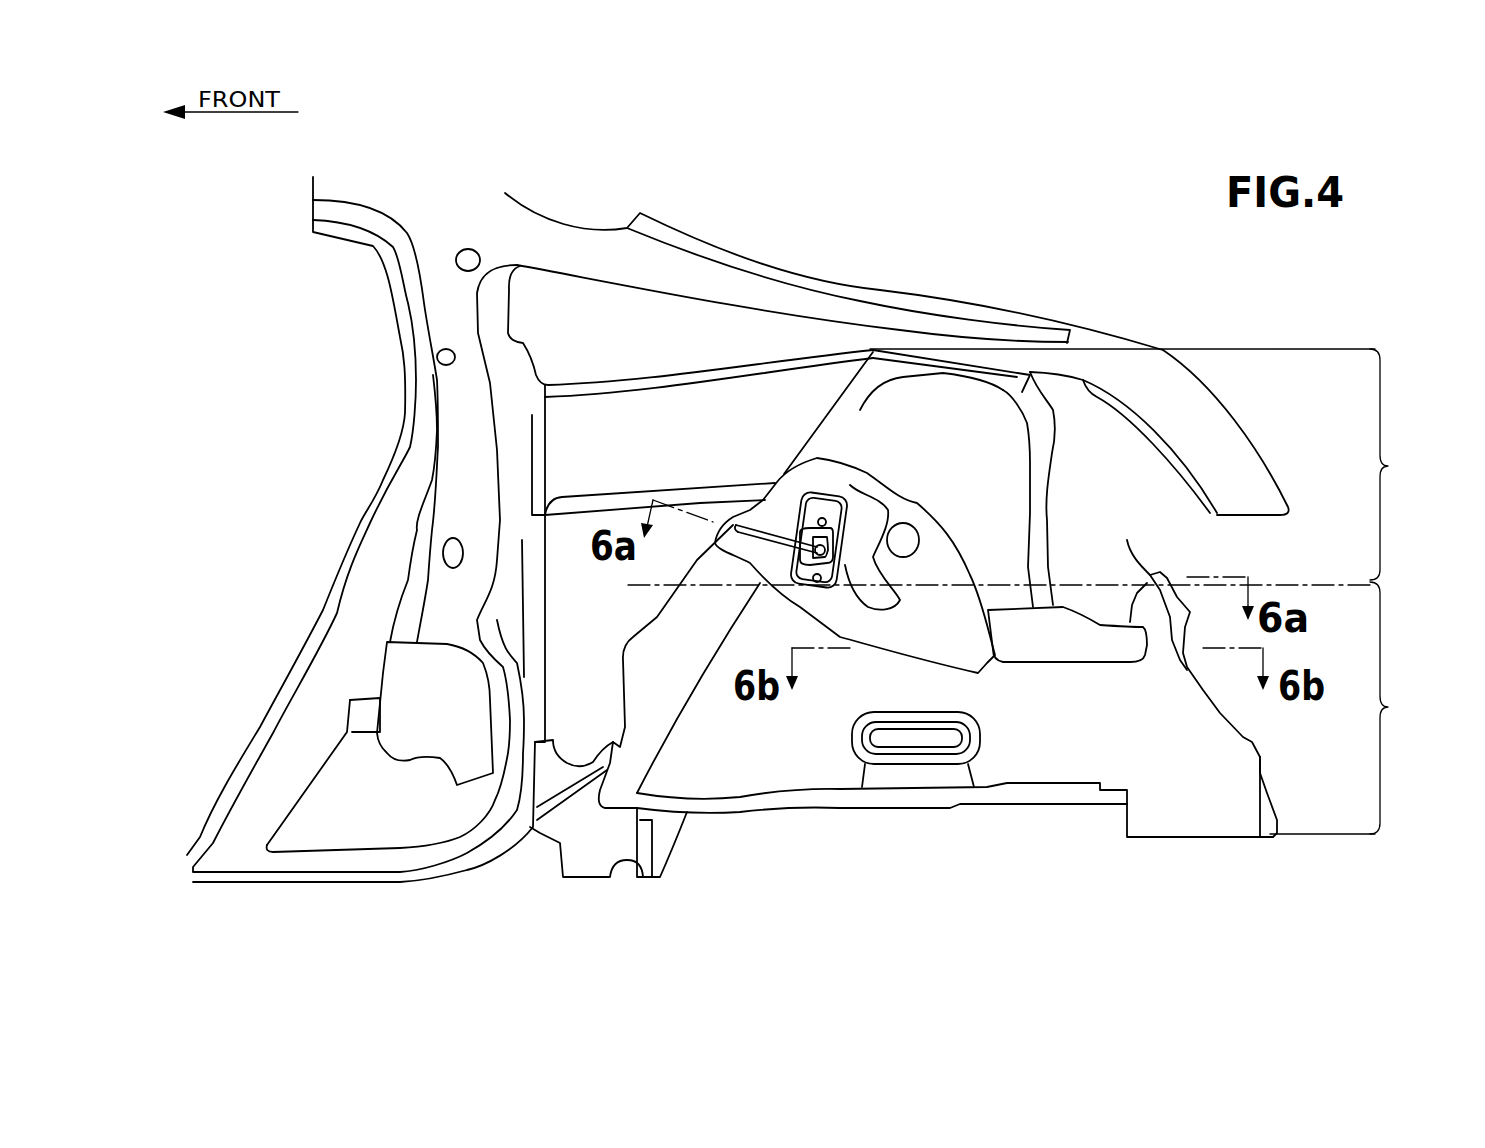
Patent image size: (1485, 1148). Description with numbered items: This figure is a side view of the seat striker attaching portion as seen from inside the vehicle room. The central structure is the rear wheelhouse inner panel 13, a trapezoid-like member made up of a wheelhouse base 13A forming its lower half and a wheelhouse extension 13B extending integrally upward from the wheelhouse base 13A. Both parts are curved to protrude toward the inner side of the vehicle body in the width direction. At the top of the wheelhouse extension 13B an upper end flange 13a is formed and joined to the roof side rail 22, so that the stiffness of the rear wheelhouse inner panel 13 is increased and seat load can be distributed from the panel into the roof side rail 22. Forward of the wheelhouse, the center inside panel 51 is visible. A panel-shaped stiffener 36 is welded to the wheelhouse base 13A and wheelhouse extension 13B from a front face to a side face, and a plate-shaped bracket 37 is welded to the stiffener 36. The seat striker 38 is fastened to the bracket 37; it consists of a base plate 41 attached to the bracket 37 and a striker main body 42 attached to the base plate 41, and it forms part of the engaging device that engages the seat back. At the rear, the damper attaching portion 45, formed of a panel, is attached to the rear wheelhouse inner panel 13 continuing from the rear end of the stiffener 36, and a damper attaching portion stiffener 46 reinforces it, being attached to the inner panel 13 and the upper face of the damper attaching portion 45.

The rear wheelhouse inner panel 13 is at (848, 368).
The wheelhouse base 13A is at (1353, 708).
The wheelhouse extension 13B is at (1153, 464).
The upper end flange 13a is at (970, 375).
The roof side rail 22 is at (1013, 338).
The stiffener 36 is at (920, 652).
The bracket 37 is at (852, 550).
The seat striker 38 is at (840, 512).
The base plate 41 is at (812, 510).
The striker main body 42 is at (750, 517).
The damper attaching portion 45 is at (1050, 662).
The damper attaching portion stiffener 46 is at (1073, 390).
The center inside panel 51 is at (452, 398).